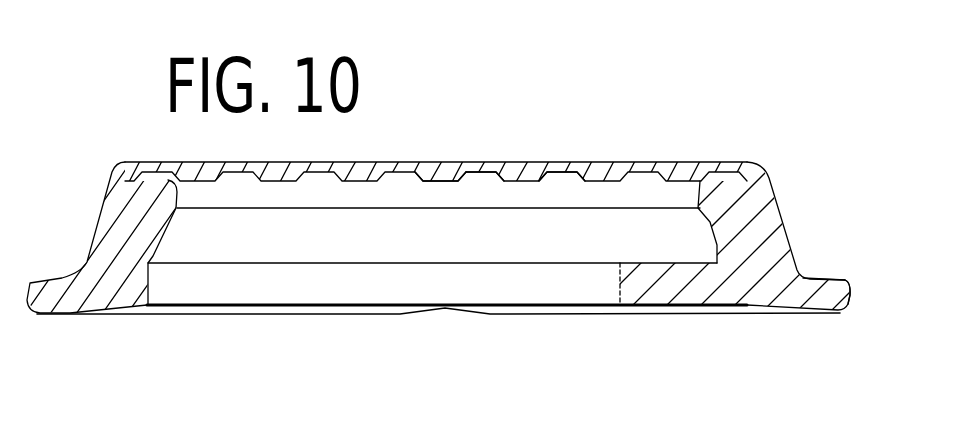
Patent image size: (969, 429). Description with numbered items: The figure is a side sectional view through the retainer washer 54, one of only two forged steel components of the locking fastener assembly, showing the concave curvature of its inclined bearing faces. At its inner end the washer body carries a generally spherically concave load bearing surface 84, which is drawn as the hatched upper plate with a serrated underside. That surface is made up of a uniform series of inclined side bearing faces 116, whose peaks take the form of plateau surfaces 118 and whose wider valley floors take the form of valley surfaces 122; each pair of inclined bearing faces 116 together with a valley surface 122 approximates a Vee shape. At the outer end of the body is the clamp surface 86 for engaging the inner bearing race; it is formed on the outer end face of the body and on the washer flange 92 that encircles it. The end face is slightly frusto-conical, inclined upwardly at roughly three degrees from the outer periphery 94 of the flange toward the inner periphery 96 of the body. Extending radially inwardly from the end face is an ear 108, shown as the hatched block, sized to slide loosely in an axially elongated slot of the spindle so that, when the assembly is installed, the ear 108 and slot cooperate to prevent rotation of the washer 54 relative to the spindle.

The retainer washer 54 is at (782, 207).
The load bearing surface 84 is at (667, 162).
The clamp surface 86 is at (753, 313).
The washer flange 92 is at (820, 282).
The outer periphery 94 is at (852, 295).
The inner periphery 96 is at (533, 293).
The ear 108 is at (653, 293).
The inclined side bearing faces 116 is at (590, 160).
The plateau surfaces 118 is at (485, 160).
The valley surfaces 122 is at (528, 160).